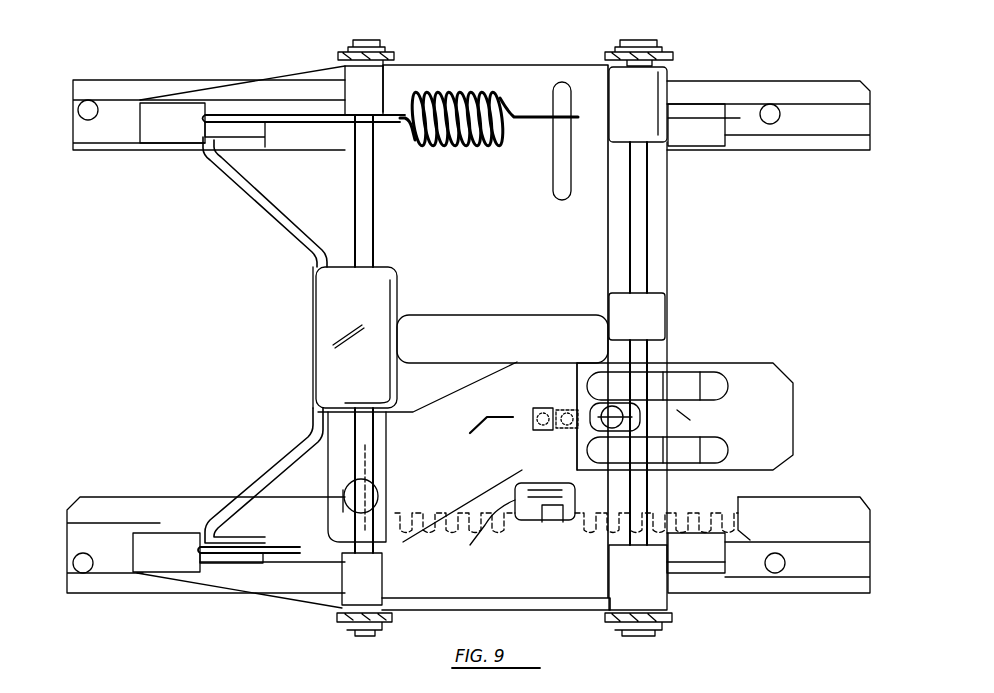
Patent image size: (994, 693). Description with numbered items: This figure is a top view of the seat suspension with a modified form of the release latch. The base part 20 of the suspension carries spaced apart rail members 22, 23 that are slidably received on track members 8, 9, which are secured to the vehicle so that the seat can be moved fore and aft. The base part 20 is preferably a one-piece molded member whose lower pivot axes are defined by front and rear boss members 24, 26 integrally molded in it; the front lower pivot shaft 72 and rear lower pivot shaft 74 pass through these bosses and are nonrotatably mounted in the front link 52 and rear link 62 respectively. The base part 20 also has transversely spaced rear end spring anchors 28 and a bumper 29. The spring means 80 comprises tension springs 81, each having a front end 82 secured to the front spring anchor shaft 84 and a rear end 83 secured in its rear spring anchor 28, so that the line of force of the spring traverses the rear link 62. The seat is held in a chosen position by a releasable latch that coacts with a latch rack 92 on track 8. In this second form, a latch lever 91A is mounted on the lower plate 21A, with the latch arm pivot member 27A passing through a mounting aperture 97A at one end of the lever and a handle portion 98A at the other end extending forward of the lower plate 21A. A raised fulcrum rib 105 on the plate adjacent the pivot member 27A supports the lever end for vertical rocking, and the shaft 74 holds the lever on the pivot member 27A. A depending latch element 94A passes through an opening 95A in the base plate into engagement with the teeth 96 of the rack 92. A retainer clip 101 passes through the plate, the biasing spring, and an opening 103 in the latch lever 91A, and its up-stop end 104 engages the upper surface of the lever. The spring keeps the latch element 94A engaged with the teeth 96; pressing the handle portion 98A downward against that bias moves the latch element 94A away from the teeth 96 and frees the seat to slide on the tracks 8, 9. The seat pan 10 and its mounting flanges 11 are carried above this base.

The track member 8 is at (123, 588).
The track member 9 is at (805, 80).
The pan 10 is at (880, 30).
The mounting flanges 11 is at (287, 493).
The base part 20 is at (304, 276).
The lower plate 21A is at (502, 316).
The rail member 22 is at (735, 565).
The rail member 23 is at (728, 118).
The front boss member 24 is at (655, 80).
The rear boss member 26 is at (385, 80).
The latch arm pivot member 27A is at (343, 502).
The rear end spring anchor 28 is at (207, 125).
The bumper 29 is at (350, 333).
The front link 52 is at (660, 45).
The rear link 62 is at (380, 50).
The front lower pivot shaft 72 is at (655, 196).
The rear lower pivot shaft 74 is at (355, 212).
The spring means 80 is at (496, 113).
The tension spring 81 is at (455, 150).
The front end 82 is at (578, 116).
The rear end 83 is at (225, 120).
The front spring anchor shaft 84 is at (553, 185).
The latch lever 91A is at (713, 352).
The latch rack 92 is at (705, 517).
The latch element 94A is at (557, 526).
The opening 95A is at (421, 484).
The teeth 96 is at (728, 515).
The mounting aperture 97A is at (378, 482).
The handle portion 98A is at (790, 382).
The retainer clip 101 is at (650, 380).
The opening 103 is at (590, 408).
The up-stop end 104 is at (618, 432).
The rib 105 is at (372, 440).